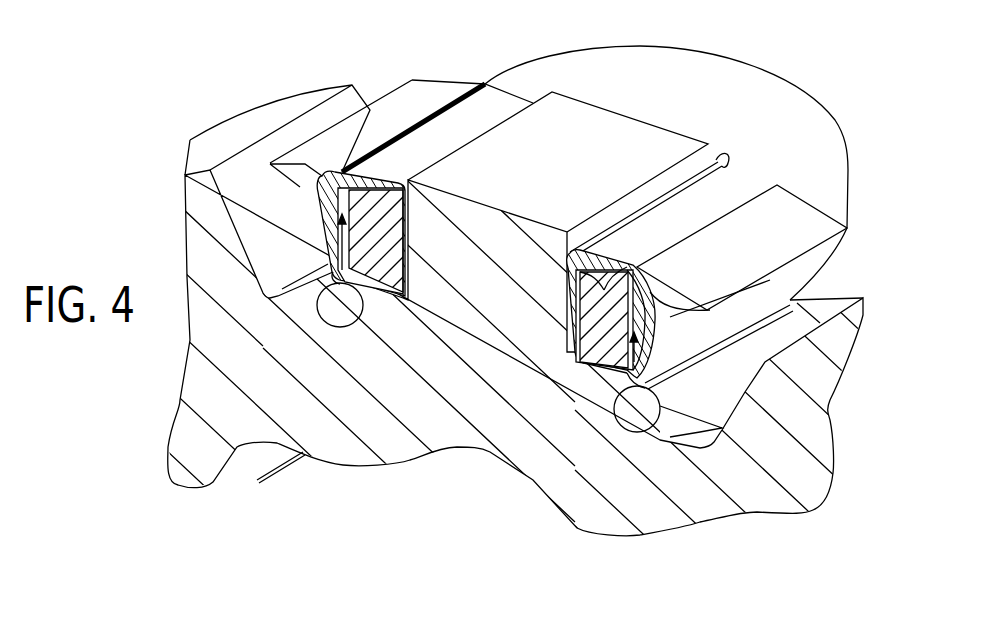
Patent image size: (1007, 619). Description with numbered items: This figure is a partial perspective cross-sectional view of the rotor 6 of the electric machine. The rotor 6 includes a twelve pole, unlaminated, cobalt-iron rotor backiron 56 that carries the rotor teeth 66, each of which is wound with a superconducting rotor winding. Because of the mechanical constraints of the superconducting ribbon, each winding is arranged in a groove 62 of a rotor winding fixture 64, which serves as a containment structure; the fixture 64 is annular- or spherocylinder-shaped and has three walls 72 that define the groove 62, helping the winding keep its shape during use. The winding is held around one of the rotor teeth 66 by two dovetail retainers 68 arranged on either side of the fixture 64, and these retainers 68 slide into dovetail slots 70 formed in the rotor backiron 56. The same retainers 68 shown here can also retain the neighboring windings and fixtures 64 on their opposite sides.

The rotor 6 is at (165, 131).
The rotor backiron 56 is at (435, 433).
The groove 62 is at (333, 270).
The rotor winding fixture 64 is at (766, 98).
The rotor teeth 66 is at (250, 125).
The dovetail retainers 68 is at (408, 107).
The dovetail slots 70 is at (347, 327).
The walls 72 is at (640, 311).